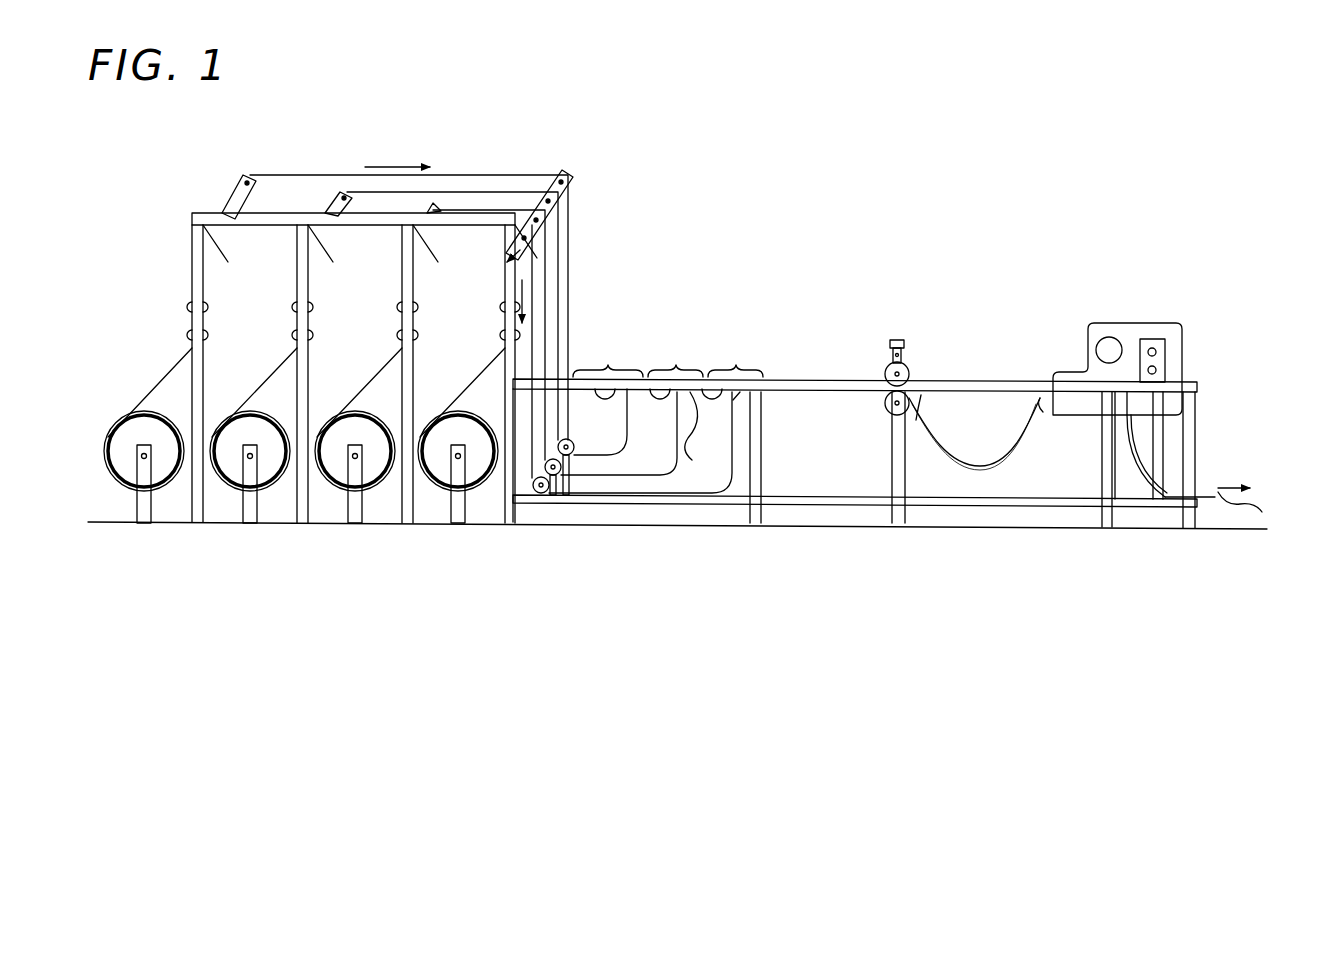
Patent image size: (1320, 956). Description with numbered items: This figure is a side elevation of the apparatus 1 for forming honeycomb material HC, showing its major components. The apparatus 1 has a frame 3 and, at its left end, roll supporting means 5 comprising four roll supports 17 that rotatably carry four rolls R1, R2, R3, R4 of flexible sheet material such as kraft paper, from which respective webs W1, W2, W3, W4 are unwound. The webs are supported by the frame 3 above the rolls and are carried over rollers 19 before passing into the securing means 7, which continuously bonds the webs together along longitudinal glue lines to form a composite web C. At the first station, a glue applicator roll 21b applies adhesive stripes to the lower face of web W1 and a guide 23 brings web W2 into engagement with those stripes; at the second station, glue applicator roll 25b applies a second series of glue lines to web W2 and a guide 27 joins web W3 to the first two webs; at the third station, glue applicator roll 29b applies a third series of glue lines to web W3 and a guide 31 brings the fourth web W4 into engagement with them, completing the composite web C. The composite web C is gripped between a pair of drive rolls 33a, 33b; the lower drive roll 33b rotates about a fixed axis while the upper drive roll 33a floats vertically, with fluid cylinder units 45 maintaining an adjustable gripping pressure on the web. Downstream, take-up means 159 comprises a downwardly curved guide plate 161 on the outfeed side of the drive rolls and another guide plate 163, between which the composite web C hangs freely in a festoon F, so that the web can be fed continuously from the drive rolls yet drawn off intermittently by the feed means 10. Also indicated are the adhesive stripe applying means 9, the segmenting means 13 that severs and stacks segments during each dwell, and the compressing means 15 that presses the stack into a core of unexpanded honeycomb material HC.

The apparatus for forming honeycomb material 1 is at (906, 207).
The frame 3 is at (828, 506).
The means for rotatably supporting rolls 5 is at (133, 461).
The securing means 7 is at (655, 336).
The means for applying stripes of adhesive 9 is at (1065, 356).
The feed means 10 is at (1090, 306).
The segmenting means 13 is at (1131, 370).
The compressing means 15 is at (1134, 322).
The roll supports 17 is at (153, 510).
The rollers 19 is at (252, 190).
The glue applicator roll 21b is at (603, 402).
The guide 23 is at (626, 428).
The glue applicator roll 25b is at (660, 400).
The guide 27 is at (701, 430).
The glue applicator roll 29b is at (714, 400).
The guide 31 is at (745, 396).
The drive roll 33a is at (912, 370).
The drive roll 33b is at (888, 410).
The fluid cylinder units 45 is at (903, 348).
The take-up means 159 is at (1018, 462).
The guide plate 161 is at (928, 426).
The guide plate 163 is at (1040, 410).
The web W1 is at (152, 396).
The web W2 is at (262, 388).
The web W3 is at (370, 392).
The web W4 is at (468, 388).
The roll R1 is at (126, 488).
The roll R2 is at (245, 490).
The roll R3 is at (352, 491).
The roll R4 is at (455, 491).
The composite web C is at (948, 418).
The festoon F is at (960, 462).
The honeycomb material HC is at (1229, 507).